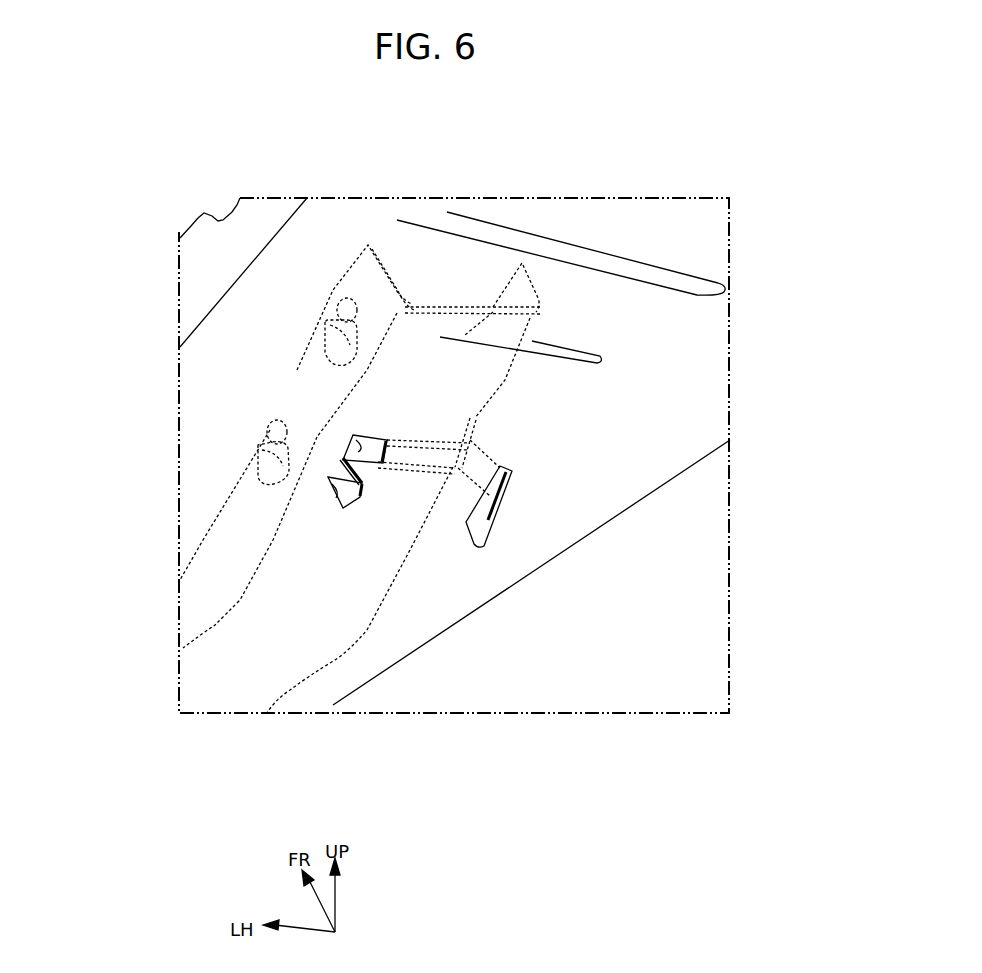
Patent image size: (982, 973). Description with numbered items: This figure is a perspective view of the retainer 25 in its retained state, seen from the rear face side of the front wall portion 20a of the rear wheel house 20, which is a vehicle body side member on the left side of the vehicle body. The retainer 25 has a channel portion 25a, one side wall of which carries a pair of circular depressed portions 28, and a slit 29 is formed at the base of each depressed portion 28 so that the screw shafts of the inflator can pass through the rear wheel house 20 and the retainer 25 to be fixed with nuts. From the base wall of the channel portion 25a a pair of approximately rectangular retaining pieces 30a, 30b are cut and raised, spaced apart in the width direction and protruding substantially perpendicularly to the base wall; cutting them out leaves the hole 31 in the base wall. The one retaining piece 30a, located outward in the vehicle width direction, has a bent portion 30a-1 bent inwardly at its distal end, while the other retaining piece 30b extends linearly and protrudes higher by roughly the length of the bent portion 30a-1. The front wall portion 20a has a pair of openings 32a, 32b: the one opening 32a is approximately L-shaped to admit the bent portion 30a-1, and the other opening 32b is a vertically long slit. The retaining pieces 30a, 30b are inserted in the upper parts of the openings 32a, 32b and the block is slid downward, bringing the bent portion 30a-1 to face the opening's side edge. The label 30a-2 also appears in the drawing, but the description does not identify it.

The rear wheel house 20 is at (625, 232).
The front wall portion 20a is at (330, 247).
The retainer 25 is at (348, 278).
The channel portion 25a is at (467, 330).
The slit 29 is at (340, 308).
The depressed portion 28 is at (327, 323).
The retaining piece 30a is at (338, 482).
The bent portion 30a-1 is at (350, 455).
The lower tab of first fixing piece 30a-2 is at (328, 478).
The opening 32a is at (346, 469).
The hole 31 is at (470, 430).
The retaining piece 30b is at (490, 535).
The opening 32b is at (507, 487).